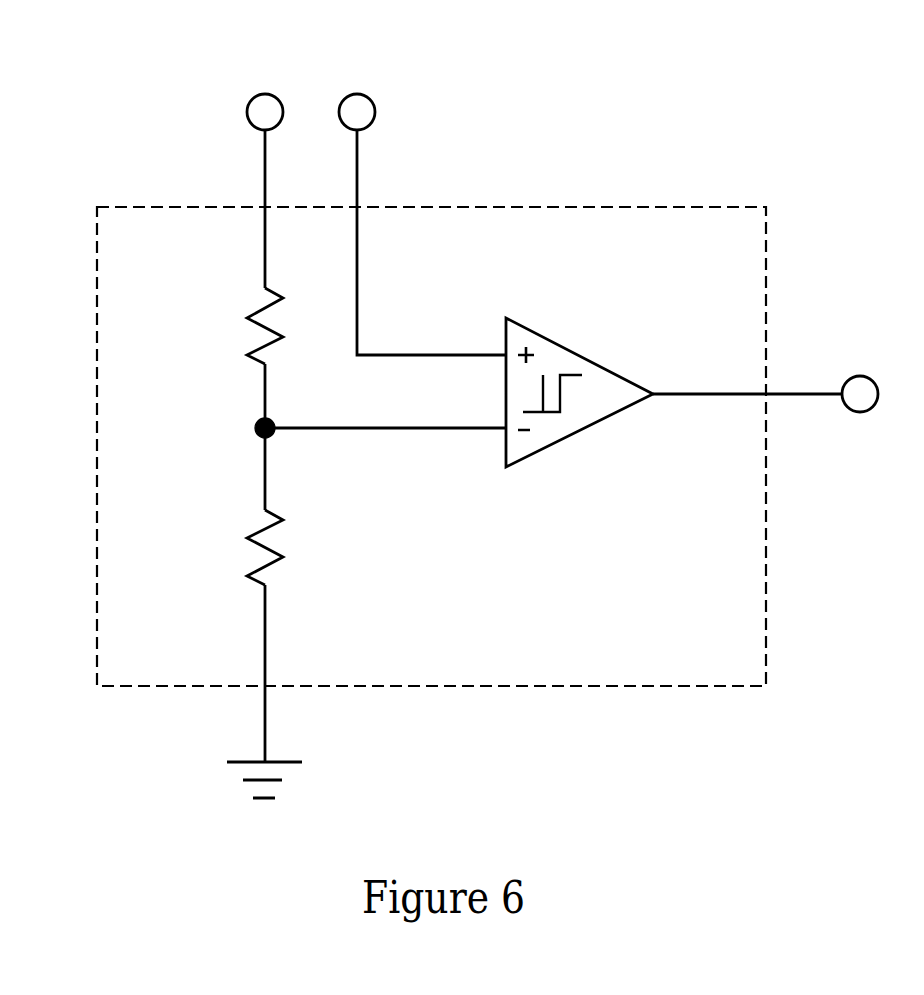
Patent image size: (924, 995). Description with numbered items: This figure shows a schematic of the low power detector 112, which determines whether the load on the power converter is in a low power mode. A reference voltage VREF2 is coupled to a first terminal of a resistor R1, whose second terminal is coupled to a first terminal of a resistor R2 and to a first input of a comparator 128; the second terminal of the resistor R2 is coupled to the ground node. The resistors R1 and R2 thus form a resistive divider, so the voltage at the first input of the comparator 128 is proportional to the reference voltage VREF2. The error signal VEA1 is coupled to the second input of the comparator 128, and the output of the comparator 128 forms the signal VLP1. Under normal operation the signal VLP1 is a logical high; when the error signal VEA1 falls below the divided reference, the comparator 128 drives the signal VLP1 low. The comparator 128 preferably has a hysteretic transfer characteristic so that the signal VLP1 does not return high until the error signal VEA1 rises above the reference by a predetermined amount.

The low power detector 112 is at (643, 207).
The comparator 128 is at (587, 358).
The resistor R1 is at (236, 326).
The resistor R2 is at (236, 547).
The reference voltage VREF2 is at (239, 83).
The error signal VEA1 is at (361, 83).
The low power signal VLP1 is at (875, 368).